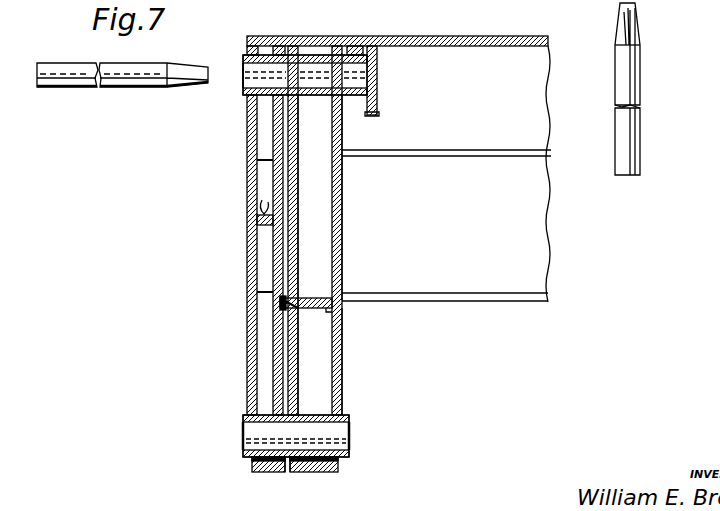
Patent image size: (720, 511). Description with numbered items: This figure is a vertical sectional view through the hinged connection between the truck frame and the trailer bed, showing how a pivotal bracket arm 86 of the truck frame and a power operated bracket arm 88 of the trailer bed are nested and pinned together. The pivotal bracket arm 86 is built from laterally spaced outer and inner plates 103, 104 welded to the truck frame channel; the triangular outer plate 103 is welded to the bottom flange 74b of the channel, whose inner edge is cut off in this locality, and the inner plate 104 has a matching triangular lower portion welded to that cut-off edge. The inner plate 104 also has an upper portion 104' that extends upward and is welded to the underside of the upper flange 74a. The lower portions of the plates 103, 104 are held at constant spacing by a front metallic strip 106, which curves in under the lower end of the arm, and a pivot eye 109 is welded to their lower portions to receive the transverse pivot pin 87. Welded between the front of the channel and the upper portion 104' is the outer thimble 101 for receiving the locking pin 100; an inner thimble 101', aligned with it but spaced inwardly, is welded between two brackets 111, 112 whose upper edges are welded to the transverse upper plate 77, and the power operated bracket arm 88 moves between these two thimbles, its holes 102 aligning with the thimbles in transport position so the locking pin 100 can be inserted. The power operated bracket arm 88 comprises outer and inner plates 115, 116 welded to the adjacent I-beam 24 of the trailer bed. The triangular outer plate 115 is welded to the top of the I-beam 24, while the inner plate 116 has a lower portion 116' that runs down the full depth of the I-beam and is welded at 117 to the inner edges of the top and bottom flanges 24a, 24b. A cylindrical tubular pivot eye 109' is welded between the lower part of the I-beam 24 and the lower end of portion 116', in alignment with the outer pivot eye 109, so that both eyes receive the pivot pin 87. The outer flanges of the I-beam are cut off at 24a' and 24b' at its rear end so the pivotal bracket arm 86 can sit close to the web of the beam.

The locking pin 100 is at (640, 60).
The transverse upper plate 77 is at (460, 37).
The upper flange 74a is at (264, 37).
The inner thimble 101' is at (332, 75).
The holes 102 is at (312, 75).
The outer thimble 101 is at (222, 88).
The bracket 112 is at (377, 112).
The bracket 111 is at (345, 97).
The pivotal bracket arm 86 is at (246, 242).
The outer plate 103 is at (250, 268).
The I-beam 24 is at (248, 128).
The power operated bracket arm 88 is at (345, 252).
The inner plate 116 is at (369, 197).
The lower portion 116' is at (371, 361).
The outer plate 115 is at (298, 185).
The upper portion 104' is at (231, 159).
The bottom flange 74b is at (262, 218).
The inner plate 104 is at (230, 292).
The top flange 24a is at (331, 289).
The cut-off 24a' is at (238, 317).
The weld 117 is at (330, 310).
The pivot pin 87 is at (246, 440).
The pivot eye 109 is at (220, 451).
The tubular pivot eye 109' is at (377, 441).
The front metallic strip 106 is at (265, 472).
The bottom flange 24b is at (318, 483).
The cut-off 24b' is at (278, 484).